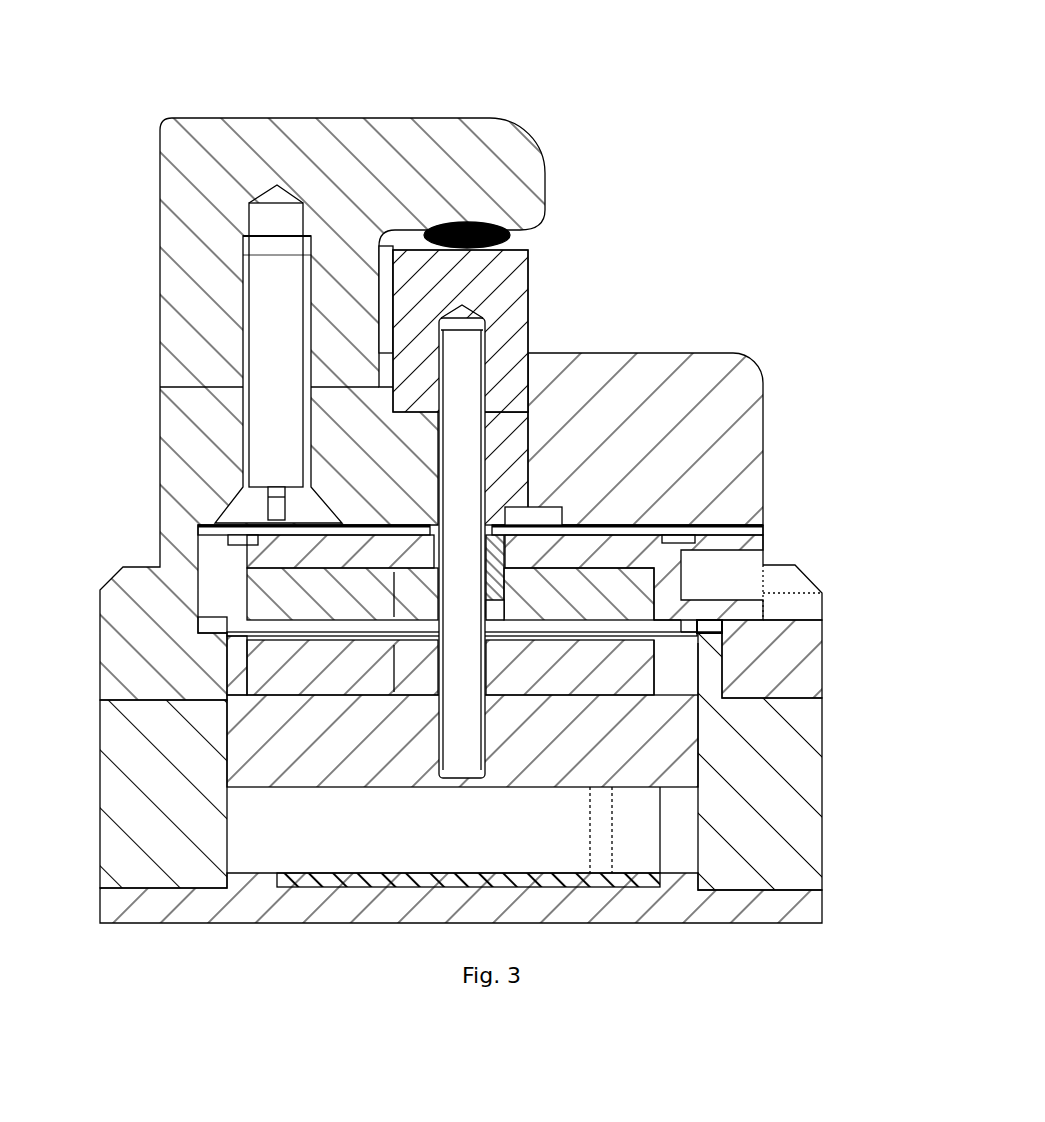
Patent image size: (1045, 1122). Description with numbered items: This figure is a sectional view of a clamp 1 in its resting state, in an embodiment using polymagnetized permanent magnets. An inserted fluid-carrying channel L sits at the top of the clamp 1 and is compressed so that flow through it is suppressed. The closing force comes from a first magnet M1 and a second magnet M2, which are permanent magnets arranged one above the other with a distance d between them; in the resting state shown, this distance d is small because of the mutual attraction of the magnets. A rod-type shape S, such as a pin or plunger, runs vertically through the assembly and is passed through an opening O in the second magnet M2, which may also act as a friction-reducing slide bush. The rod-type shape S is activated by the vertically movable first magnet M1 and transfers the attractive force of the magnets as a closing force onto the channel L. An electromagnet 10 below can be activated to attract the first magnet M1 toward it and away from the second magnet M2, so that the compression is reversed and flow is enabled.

The clamp 1 is at (107, 62).
The rod-type shape S is at (472, 388).
The fluid-carrying channel L is at (530, 235).
The opening O is at (502, 608).
The second magnet M2 is at (648, 588).
The first magnet M1 is at (648, 658).
The electromagnet 10 is at (455, 880).
The distance d is at (648, 190).